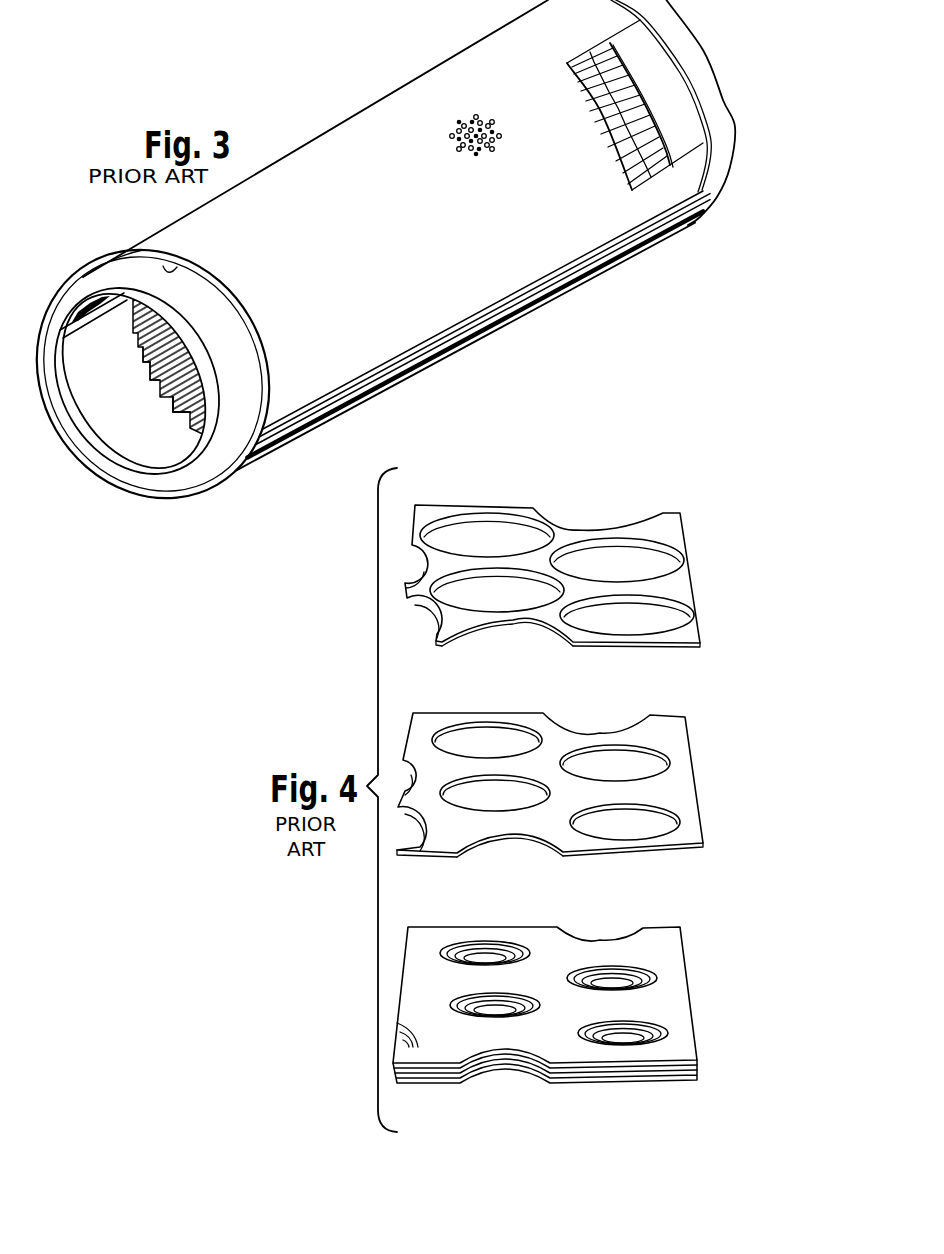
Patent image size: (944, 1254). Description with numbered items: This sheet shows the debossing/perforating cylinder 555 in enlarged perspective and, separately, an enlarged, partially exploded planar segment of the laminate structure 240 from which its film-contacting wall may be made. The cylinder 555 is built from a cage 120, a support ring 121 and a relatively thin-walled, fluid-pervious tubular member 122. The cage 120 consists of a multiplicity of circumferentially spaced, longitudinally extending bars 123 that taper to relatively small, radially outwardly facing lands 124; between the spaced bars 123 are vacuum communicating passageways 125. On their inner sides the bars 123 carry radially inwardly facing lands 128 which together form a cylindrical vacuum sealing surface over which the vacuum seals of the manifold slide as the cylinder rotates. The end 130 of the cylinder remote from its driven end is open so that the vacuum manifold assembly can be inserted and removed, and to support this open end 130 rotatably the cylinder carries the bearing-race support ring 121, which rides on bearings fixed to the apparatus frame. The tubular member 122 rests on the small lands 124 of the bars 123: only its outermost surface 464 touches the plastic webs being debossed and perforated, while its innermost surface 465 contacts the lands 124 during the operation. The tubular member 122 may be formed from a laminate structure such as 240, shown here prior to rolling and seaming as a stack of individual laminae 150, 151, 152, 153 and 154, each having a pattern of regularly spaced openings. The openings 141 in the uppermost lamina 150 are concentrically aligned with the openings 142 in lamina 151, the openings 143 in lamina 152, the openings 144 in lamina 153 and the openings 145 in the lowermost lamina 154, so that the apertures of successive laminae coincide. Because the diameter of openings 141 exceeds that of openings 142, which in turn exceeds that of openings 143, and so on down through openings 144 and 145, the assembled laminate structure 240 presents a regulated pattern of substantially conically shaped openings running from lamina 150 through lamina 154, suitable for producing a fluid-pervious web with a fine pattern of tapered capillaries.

In FIG. 3, the debossing/perforating cylinder 555 is at (409, 70).
In FIG. 3, the tubular member 122 is at (335, 116).
In FIG. 3, the lands 124 is at (630, 133).
In FIG. 3, the support ring 121 is at (120, 262).
In FIG. 3, the outermost surface 464 is at (143, 248).
In FIG. 3, the innermost surface 465 is at (174, 266).
In FIG. 3, the end 130 is at (94, 480).
In FIG. 3, the cage 120 is at (133, 421).
In FIG. 3, the vacuum communicating passageways 125 is at (150, 359).
In FIG. 3, the bars 123 is at (150, 377).
In FIG. 3, the radially inwardly facing lands 128 is at (185, 400).
In FIG. 4, the laminate structure 240 is at (660, 486).
In FIG. 4, the openings 141 is at (607, 555).
In FIG. 4, the lamina 150 is at (545, 612).
In FIG. 4, the openings 142 is at (620, 757).
In FIG. 4, the lamina 151 is at (525, 825).
In FIG. 4, the openings 143 is at (600, 962).
In FIG. 4, the openings 144 is at (611, 972).
In FIG. 4, the openings 145 is at (643, 977).
In FIG. 4, the lamina 152 is at (450, 1050).
In FIG. 4, the lamina 153 is at (560, 1067).
In FIG. 4, the lamina 154 is at (648, 1077).